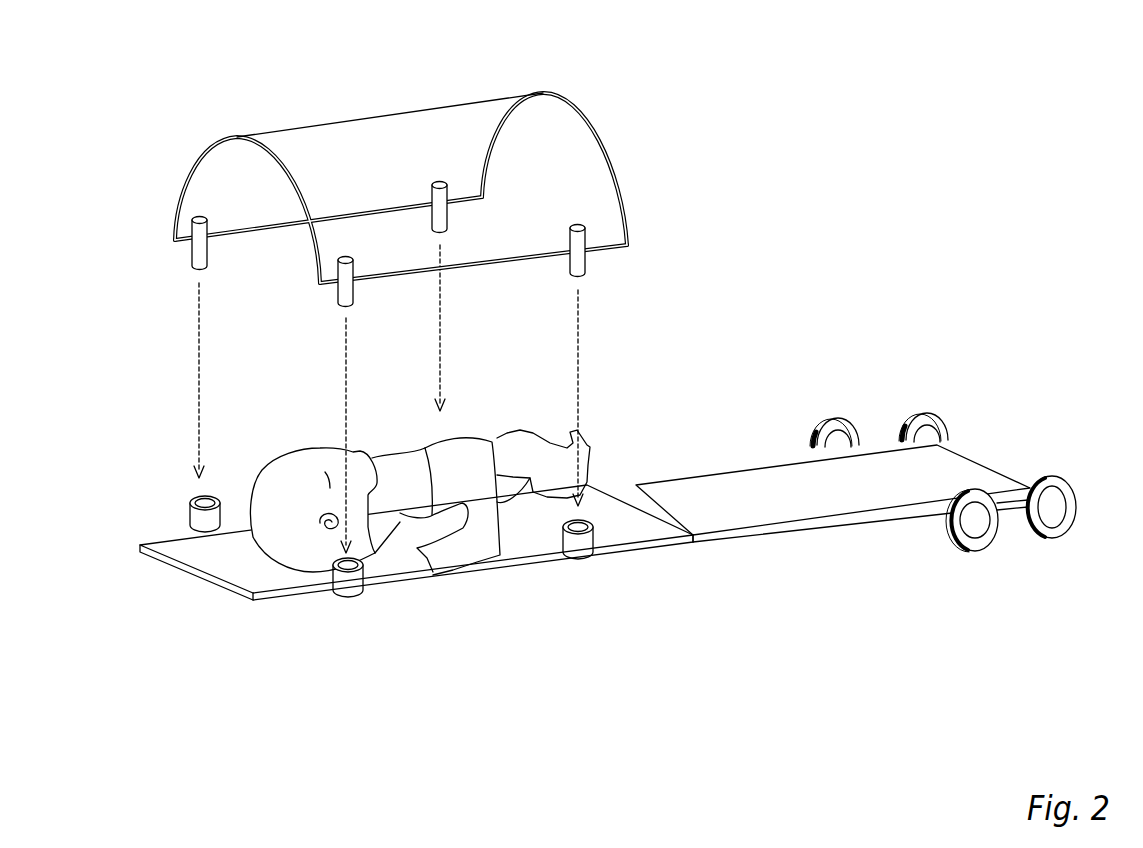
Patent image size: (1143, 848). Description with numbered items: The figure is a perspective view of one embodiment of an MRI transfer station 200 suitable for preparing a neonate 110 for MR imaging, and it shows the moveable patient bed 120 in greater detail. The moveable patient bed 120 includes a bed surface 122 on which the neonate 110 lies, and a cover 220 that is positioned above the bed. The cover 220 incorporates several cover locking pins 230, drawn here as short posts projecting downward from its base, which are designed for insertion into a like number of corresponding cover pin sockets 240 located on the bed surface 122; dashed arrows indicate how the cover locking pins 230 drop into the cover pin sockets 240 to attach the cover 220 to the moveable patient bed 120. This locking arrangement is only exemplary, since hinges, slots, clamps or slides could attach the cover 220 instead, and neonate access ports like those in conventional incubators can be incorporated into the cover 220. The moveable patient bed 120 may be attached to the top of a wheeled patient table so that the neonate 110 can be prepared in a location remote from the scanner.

The MRI transfer station 200 is at (531, 28).
The cover 220 is at (590, 115).
The cover locking pins 230 is at (190, 253).
The cover pin sockets 240 is at (190, 498).
The neonate 110 is at (400, 548).
The bed surface 122 is at (628, 520).
The moveable patient bed 120 is at (947, 473).